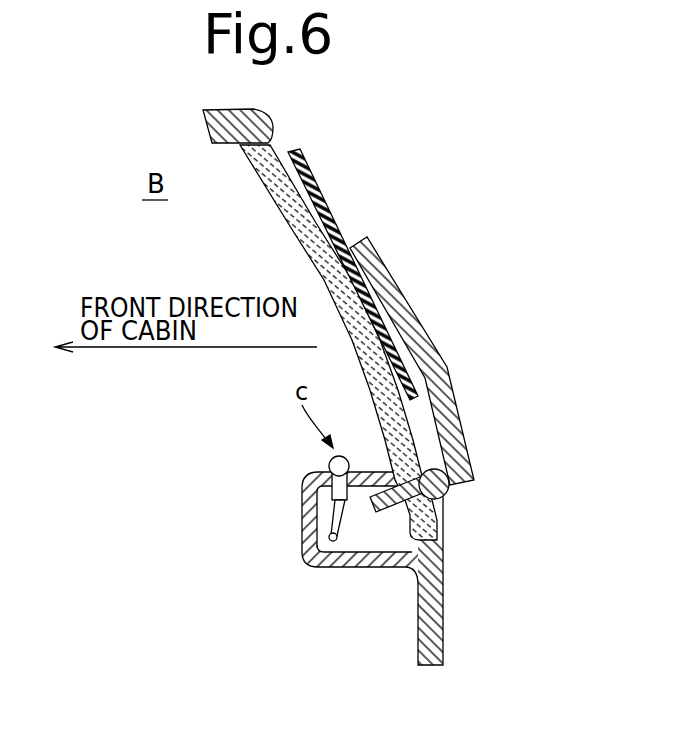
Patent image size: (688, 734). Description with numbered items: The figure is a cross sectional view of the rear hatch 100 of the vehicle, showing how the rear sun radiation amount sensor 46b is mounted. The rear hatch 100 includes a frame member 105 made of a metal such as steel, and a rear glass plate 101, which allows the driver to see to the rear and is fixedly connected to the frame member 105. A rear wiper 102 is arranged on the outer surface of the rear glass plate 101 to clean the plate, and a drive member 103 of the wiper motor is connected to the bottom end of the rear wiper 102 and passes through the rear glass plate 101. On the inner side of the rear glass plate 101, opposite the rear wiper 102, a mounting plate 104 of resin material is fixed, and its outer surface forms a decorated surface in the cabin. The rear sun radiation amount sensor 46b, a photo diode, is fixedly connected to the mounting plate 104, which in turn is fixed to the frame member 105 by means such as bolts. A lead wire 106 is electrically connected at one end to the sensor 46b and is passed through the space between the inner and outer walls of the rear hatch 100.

The rear hatch 100 is at (333, 217).
The rear glass plate 101 is at (293, 242).
The rear wiper 102 is at (425, 338).
The drive member 103 is at (448, 500).
The mounting plate 104 is at (303, 513).
The frame member 105 is at (445, 603).
The lead wire 106 is at (308, 556).
The rear sun radiation amount sensor 46b is at (328, 462).